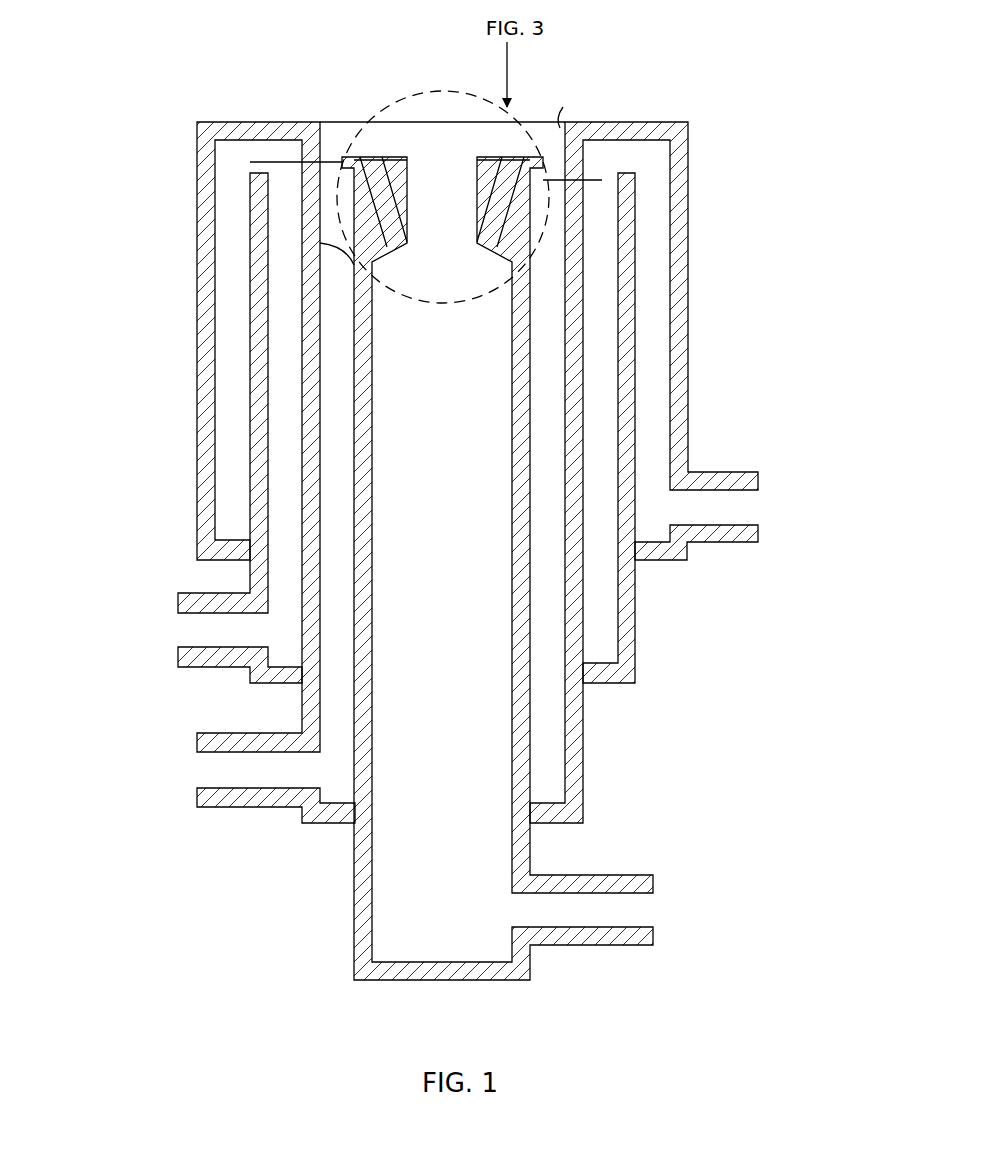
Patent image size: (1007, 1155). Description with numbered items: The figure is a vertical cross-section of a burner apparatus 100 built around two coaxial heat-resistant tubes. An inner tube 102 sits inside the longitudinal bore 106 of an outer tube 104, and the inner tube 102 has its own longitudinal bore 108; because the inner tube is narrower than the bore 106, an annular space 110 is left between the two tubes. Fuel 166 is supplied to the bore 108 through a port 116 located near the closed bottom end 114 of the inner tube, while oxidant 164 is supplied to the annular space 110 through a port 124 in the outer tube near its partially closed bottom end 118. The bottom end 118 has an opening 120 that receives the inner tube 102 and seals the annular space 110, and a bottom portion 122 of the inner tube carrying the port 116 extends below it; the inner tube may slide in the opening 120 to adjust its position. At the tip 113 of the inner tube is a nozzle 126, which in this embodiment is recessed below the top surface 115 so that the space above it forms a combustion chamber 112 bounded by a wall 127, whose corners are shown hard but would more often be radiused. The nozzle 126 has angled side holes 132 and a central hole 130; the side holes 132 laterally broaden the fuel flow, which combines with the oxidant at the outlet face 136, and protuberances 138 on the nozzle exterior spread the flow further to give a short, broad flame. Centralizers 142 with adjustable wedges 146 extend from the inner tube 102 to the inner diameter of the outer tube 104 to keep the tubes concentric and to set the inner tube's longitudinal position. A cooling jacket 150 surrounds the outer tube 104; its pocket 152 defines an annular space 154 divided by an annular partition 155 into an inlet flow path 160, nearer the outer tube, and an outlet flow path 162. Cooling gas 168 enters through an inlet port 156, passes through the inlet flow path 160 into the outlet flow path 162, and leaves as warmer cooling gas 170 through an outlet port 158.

The burner apparatus 100 is at (677, 68).
The inner tube 102 is at (532, 292).
The outer tube 104 is at (582, 260).
The longitudinal bore 106 is at (555, 192).
The longitudinal bore 108 is at (459, 475).
The annular space 110 is at (548, 373).
The combustion chamber 112 is at (463, 140).
The tip 113 is at (352, 253).
The closed bottom end 114 is at (445, 980).
The top surface 115 is at (308, 122).
The port 116 is at (527, 895).
The partially closed bottom end 118 is at (333, 823).
The opening 120 is at (355, 813).
The bottom portion 122 is at (530, 847).
The port 124 is at (310, 753).
The nozzle 126 is at (602, 180).
The wall 127 is at (568, 99).
The central hole 130 is at (459, 210).
The side holes 132 is at (380, 210).
The outlet face 136 is at (413, 147).
The protuberances 138 is at (250, 162).
The centralizers 142 is at (337, 460).
The adjustable wedge 146 is at (355, 490).
The cooling jacket 150 is at (189, 151).
The pocket 152 is at (280, 300).
The annular space 154 is at (230, 183).
The annular partition 155 is at (258, 350).
The inlet port 156 is at (255, 613).
The outlet port 158 is at (682, 490).
The inlet flow path 160 is at (275, 386).
The outlet flow path 162 is at (230, 432).
The oxidant 164 is at (210, 770).
The fuel 166 is at (638, 908).
The cooling gas 168 is at (195, 630).
The warmer cooling gas 170 is at (733, 506).